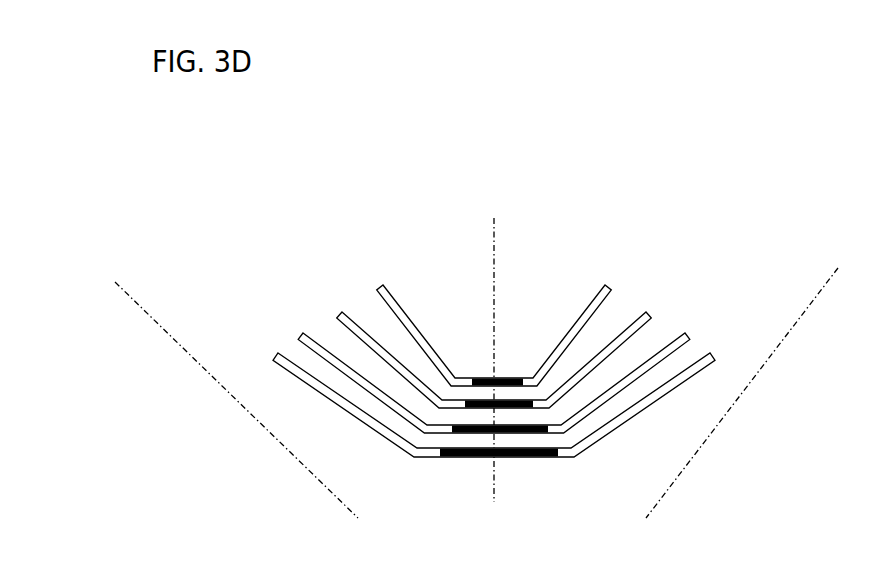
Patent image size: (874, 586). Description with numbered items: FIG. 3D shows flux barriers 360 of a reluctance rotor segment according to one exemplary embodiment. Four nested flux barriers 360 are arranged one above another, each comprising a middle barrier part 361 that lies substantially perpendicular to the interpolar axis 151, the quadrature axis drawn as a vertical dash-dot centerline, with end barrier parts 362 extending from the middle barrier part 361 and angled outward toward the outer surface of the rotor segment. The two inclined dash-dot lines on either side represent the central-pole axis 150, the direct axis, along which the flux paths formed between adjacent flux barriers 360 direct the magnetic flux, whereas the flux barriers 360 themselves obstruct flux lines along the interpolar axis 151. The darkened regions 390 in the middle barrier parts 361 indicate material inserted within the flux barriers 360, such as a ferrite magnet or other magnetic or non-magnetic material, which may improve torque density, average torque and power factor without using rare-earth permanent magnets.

The central-pole axis 150 is at (469, 382).
The interpolar axis 151 is at (496, 346).
The flux barriers 360 is at (453, 374).
The middle barrier part 361 is at (450, 459).
The end barrier parts 362 is at (372, 421).
The light emitting element 390 is at (529, 459).